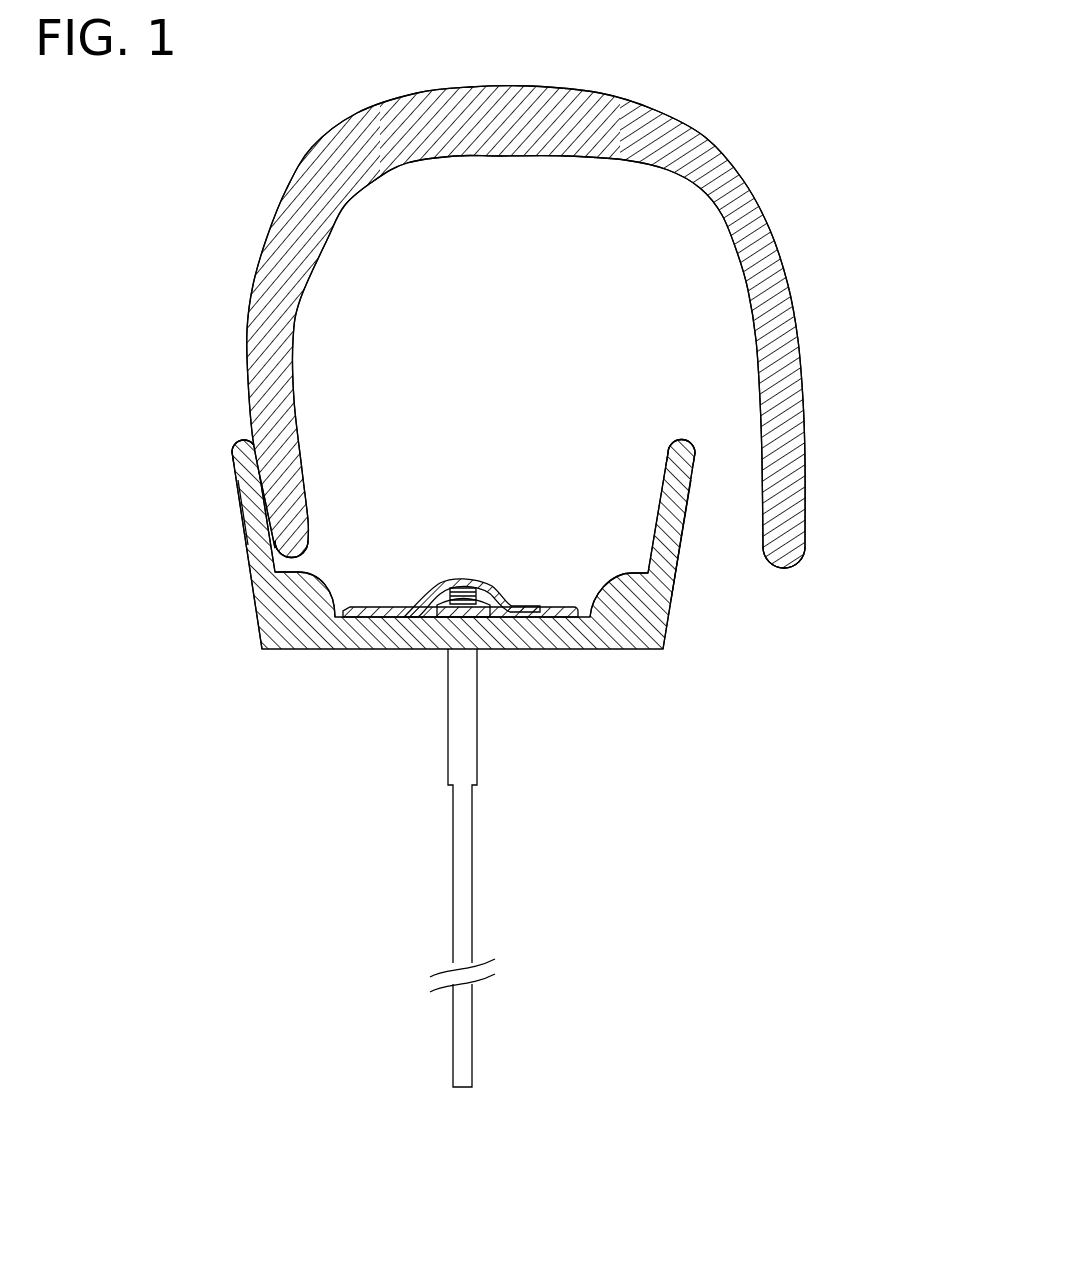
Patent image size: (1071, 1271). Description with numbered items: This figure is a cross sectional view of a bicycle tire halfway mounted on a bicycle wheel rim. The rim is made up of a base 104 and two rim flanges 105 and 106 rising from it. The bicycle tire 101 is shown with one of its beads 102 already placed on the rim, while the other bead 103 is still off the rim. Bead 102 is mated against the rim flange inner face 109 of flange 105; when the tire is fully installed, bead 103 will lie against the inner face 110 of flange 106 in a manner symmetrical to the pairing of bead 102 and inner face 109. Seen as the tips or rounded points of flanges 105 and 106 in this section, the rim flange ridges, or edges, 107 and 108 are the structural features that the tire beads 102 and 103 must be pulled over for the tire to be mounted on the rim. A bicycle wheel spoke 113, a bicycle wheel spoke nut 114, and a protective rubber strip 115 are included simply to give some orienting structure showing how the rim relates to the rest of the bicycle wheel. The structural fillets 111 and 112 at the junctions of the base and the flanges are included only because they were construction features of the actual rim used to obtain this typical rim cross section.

The bicycle tire 101 is at (302, 223).
The bead 102 is at (302, 538).
The bead 103 is at (783, 528).
The base 104 is at (388, 633).
The rim flange 105 is at (255, 526).
The rim flange 106 is at (668, 517).
The rim flange ridge 107 is at (238, 432).
The rim flange ridge 108 is at (682, 438).
The rim flange inner face 109 is at (257, 500).
The rim flange inner face 110 is at (665, 475).
The structural fillet 111 is at (300, 602).
The structural fillet 112 is at (626, 599).
The bicycle wheel spoke 113 is at (463, 710).
The bicycle wheel spoke nut 114 is at (504, 602).
The protective rubber strip 115 is at (433, 587).